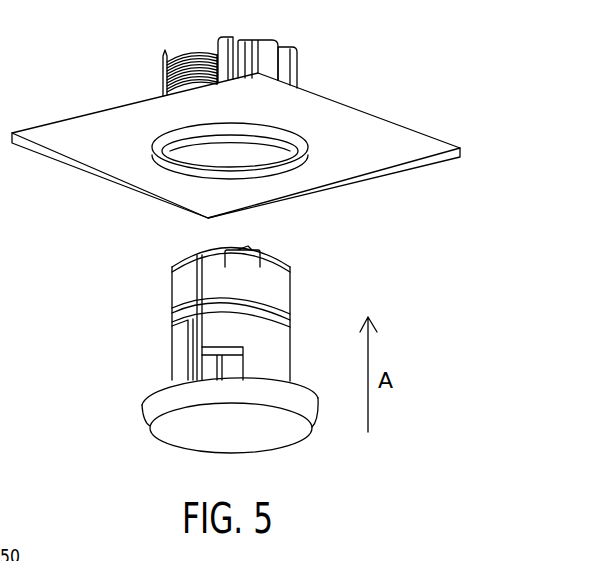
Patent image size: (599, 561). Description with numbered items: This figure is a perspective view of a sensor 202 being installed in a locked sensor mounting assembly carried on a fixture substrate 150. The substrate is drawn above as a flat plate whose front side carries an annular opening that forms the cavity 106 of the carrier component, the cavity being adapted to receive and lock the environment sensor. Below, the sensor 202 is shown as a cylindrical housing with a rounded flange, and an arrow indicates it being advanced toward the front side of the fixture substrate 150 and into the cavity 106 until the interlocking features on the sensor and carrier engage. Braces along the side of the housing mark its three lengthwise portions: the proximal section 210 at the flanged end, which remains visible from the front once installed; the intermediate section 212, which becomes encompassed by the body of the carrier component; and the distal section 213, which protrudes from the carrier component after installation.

The fixture substrate 150 is at (363, 112).
The cavity 106 is at (152, 153).
The sensor 202 is at (317, 290).
The distal section 213 is at (128, 308).
The intermediate section 212 is at (128, 392).
The proximal section 210 is at (128, 433).